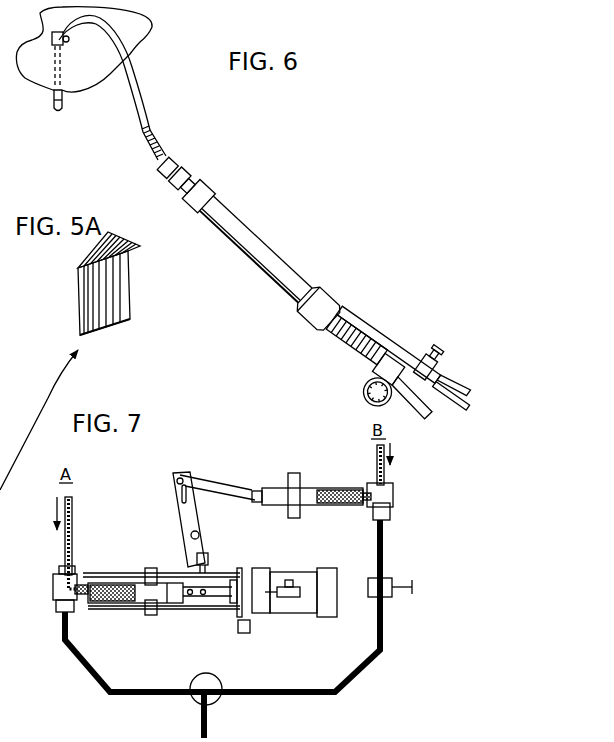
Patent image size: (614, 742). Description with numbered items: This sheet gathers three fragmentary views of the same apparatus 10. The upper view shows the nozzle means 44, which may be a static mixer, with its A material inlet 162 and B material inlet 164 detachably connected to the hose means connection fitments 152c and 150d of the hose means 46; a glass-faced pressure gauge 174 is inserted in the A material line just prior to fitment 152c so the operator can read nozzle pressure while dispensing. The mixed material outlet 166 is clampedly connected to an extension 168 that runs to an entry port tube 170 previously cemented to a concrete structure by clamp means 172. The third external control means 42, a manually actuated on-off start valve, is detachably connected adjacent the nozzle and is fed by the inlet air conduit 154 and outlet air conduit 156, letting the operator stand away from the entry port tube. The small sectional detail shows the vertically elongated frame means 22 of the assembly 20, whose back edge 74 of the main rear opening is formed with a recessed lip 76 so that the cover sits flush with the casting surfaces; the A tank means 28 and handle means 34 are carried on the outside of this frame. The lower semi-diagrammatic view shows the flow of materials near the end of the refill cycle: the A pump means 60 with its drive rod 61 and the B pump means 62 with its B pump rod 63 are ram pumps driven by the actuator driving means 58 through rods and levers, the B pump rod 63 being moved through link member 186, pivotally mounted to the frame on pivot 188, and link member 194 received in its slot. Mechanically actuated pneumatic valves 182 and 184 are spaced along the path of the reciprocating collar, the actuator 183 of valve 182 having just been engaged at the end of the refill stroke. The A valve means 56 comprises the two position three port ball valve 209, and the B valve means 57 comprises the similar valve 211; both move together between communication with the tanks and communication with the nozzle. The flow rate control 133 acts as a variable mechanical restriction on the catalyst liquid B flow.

In FIG. 6, the entry port tube 170 is at (50, 103).
In FIG. 6, the clamp means 172 is at (68, 42).
In FIG. 6, the extension 168 is at (136, 74).
In FIG. 6, the mixed material outlet 166 is at (166, 162).
In FIG. 6, the nozzle means 44 is at (340, 281).
In FIG. 7, the nozzle means 44 is at (213, 727).
In FIG. 6, the A material inlet 162 is at (340, 343).
In FIG. 6, the B material inlet 164 is at (354, 338).
In FIG. 6, the hose means connection fitment 150d is at (352, 366).
In FIG. 6, the hose means connection fitment 152c is at (354, 364).
In FIG. 6, the pressure gauge 174 is at (364, 402).
In FIG. 6, the third external control means 42 is at (427, 345).
In FIG. 6, the inlet air conduit 154 is at (455, 388).
In FIG. 6, the outlet air conduit 156 is at (458, 406).
In FIG. 6, the hose means 46 is at (438, 404).
In FIG. 6, the A tank means 28 is at (18, 145).
In FIG. 7, the A tank means 28 is at (9, 729).
In FIG. 6, the handle means 34 is at (0, 175).
In FIG. 5A, the frame means 22 is at (120, 296).
In FIG. 5A, the recessed lip 76 is at (92, 254).
In FIG. 5A, the back edge 74 is at (81, 340).
In FIG. 5A, the apparatus 10 is at (14, 325).
In FIG. 5A, the assembly 20 is at (10, 366).
In FIG. 7, the ball valve 209 is at (55, 580).
In FIG. 7, the A valve means 56 is at (55, 613).
In FIG. 7, the A pump means 60 is at (148, 563).
In FIG. 7, the drive rod 61 is at (167, 605).
In FIG. 7, the actuator 183 is at (245, 617).
In FIG. 7, the pneumatic valve 182 is at (250, 634).
In FIG. 7, the actuator driving means 58 is at (304, 613).
In FIG. 7, the pneumatic valve 184 is at (210, 556).
In FIG. 7, the link member 186 is at (203, 515).
In FIG. 7, the pivot 188 is at (178, 530).
In FIG. 7, the link member 194 is at (225, 480).
In FIG. 7, the B pump means 62 is at (338, 478).
In FIG. 7, the B pump rod 63 is at (277, 487).
In FIG. 7, the B valve means 57 is at (398, 495).
In FIG. 7, the valve 211 is at (390, 515).
In FIG. 7, the flow rate control 133 is at (393, 600).